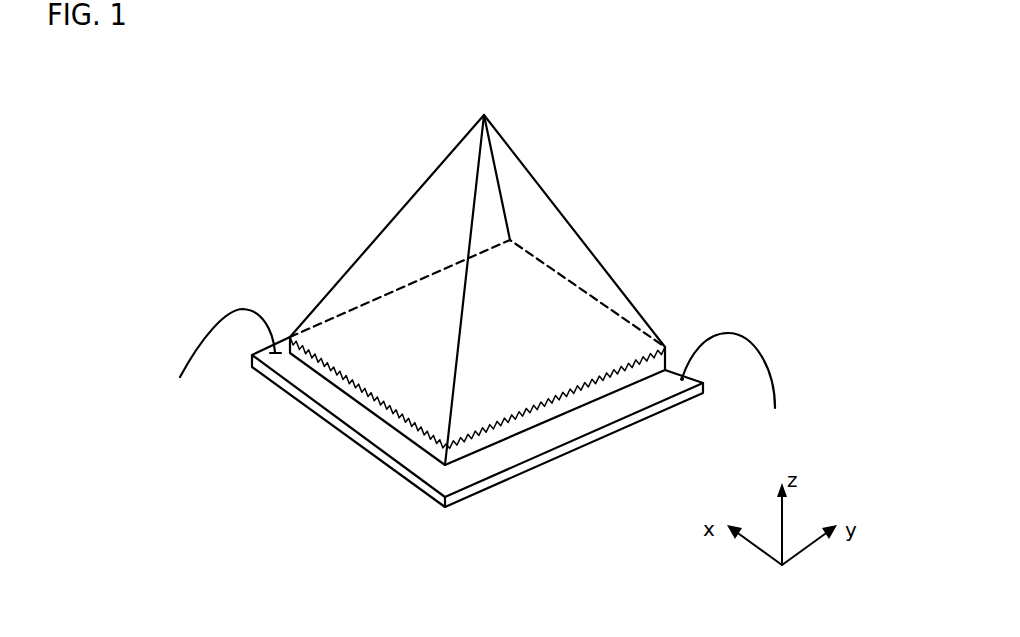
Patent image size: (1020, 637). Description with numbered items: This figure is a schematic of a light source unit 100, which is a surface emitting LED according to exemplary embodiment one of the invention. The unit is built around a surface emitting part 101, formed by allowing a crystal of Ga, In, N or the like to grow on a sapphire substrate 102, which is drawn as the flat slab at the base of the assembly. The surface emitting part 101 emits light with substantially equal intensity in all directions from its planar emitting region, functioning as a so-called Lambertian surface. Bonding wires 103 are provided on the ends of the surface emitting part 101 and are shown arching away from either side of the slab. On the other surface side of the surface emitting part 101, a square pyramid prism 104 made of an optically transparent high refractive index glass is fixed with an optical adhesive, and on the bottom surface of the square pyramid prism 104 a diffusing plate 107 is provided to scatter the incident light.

The light source unit 100 is at (653, 142).
The surface emitting part 101 is at (598, 411).
The sapphire substrate 102 is at (412, 433).
The bonding wires 103 is at (236, 309).
The square pyramid prism 104 is at (428, 200).
The diffusing plate 107 is at (352, 388).